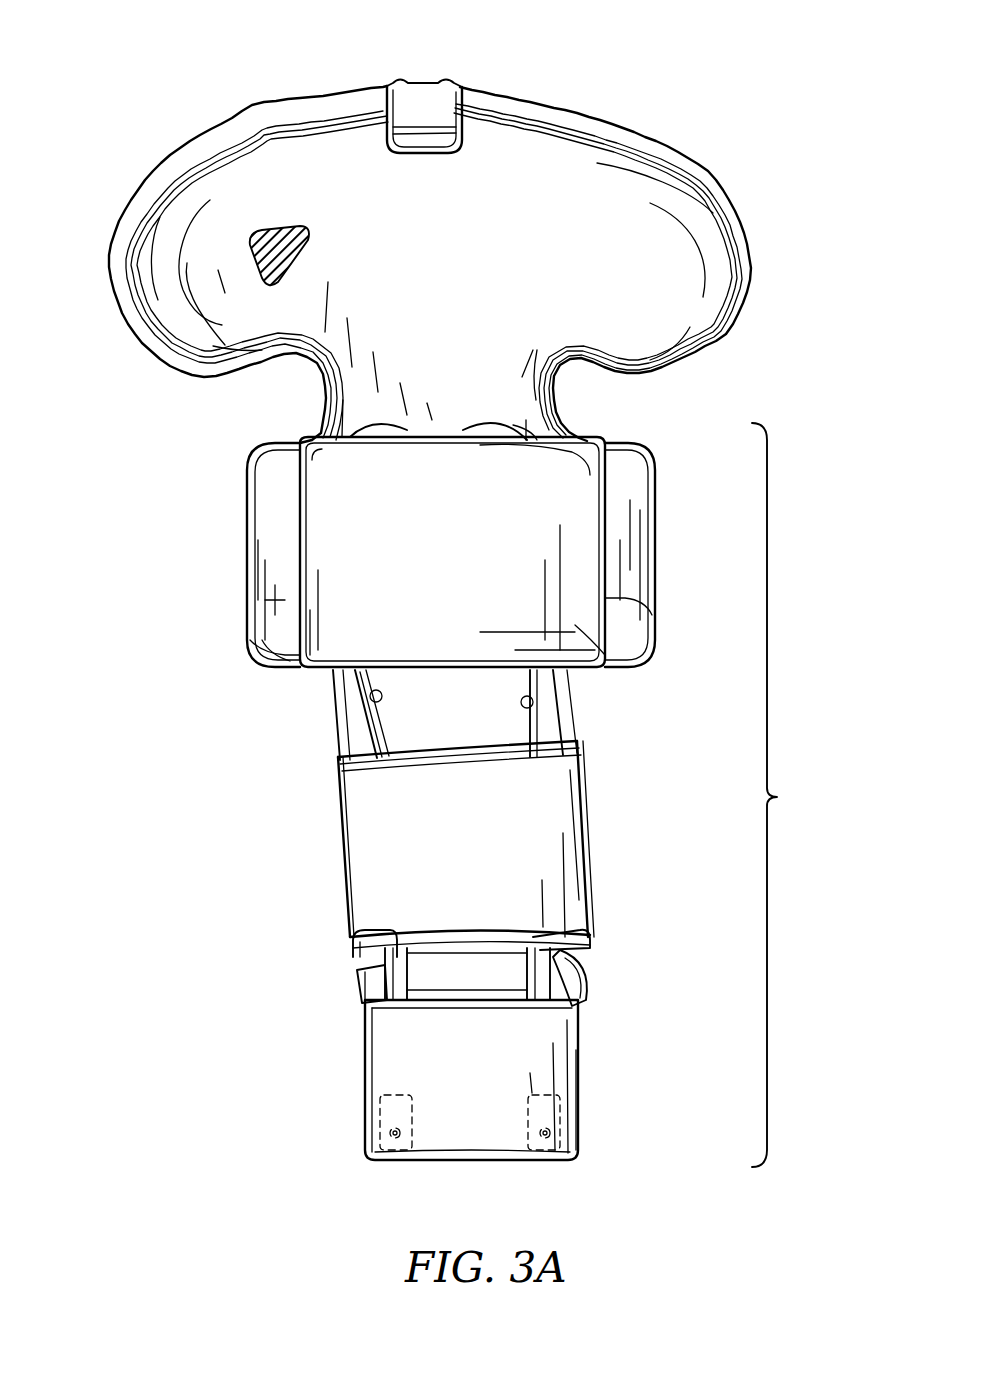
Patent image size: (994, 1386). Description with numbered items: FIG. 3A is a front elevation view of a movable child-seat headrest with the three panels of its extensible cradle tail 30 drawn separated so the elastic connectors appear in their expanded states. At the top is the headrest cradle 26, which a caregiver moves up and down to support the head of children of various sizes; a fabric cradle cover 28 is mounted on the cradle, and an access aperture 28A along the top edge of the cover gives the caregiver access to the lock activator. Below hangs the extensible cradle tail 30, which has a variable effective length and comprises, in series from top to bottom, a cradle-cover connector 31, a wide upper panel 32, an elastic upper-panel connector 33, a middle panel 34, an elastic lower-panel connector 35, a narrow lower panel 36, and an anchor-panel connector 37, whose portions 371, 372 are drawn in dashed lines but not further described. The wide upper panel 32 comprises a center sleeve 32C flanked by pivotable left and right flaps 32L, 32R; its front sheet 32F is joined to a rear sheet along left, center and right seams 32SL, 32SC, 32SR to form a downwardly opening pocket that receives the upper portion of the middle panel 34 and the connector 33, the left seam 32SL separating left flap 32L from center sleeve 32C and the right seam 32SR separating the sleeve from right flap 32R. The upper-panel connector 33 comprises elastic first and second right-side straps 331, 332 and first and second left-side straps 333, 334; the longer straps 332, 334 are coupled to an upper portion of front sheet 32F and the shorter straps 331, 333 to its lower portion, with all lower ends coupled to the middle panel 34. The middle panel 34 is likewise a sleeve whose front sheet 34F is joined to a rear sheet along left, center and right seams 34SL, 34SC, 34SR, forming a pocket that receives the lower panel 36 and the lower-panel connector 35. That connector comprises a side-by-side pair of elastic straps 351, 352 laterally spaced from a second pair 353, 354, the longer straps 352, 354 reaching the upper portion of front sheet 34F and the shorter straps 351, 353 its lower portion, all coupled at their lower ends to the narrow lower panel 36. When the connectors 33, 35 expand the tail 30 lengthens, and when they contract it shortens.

The headrest cradle 26 is at (273, 243).
The cradle cover 28 is at (695, 181).
The access aperture 28A is at (426, 77).
The extensible cradle tail 30 is at (781, 795).
The cradle-cover connector 31 is at (308, 415).
The wide upper panel 32 is at (400, 565).
The front sheet 32F is at (452, 552).
The left flap 32L is at (275, 600).
The right flap 32R is at (628, 535).
The left seam 32SL is at (285, 640).
The right seam 32SR is at (608, 598).
The center seam 32SC is at (522, 432).
The center sleeve 32C is at (578, 635).
The elastic upper-panel connector 33 is at (430, 746).
The first right-side strap 331 is at (592, 730).
The second right-side strap 332 is at (578, 737).
The first left-side strap 333 is at (370, 698).
The second left-side strap 334 is at (348, 745).
The middle panel 34 is at (435, 810).
The front sheet 34F is at (464, 852).
The left seam 34SL is at (347, 905).
The right seam 34SR is at (590, 828).
The center seam 34SC is at (338, 673).
The elastic lower-panel connector 35 is at (449, 987).
The first right-side strap 351 is at (565, 920).
The second right-side strap 352 is at (583, 985).
The first strap of second pair 353 is at (372, 937).
The second strap of second pair 354 is at (365, 990).
The narrow lower panel 36 is at (426, 1103).
The anchor-panel connector 37 is at (449, 1150).
The fastener recess 371 is at (565, 1118).
The fastener recess 372 is at (375, 1113).